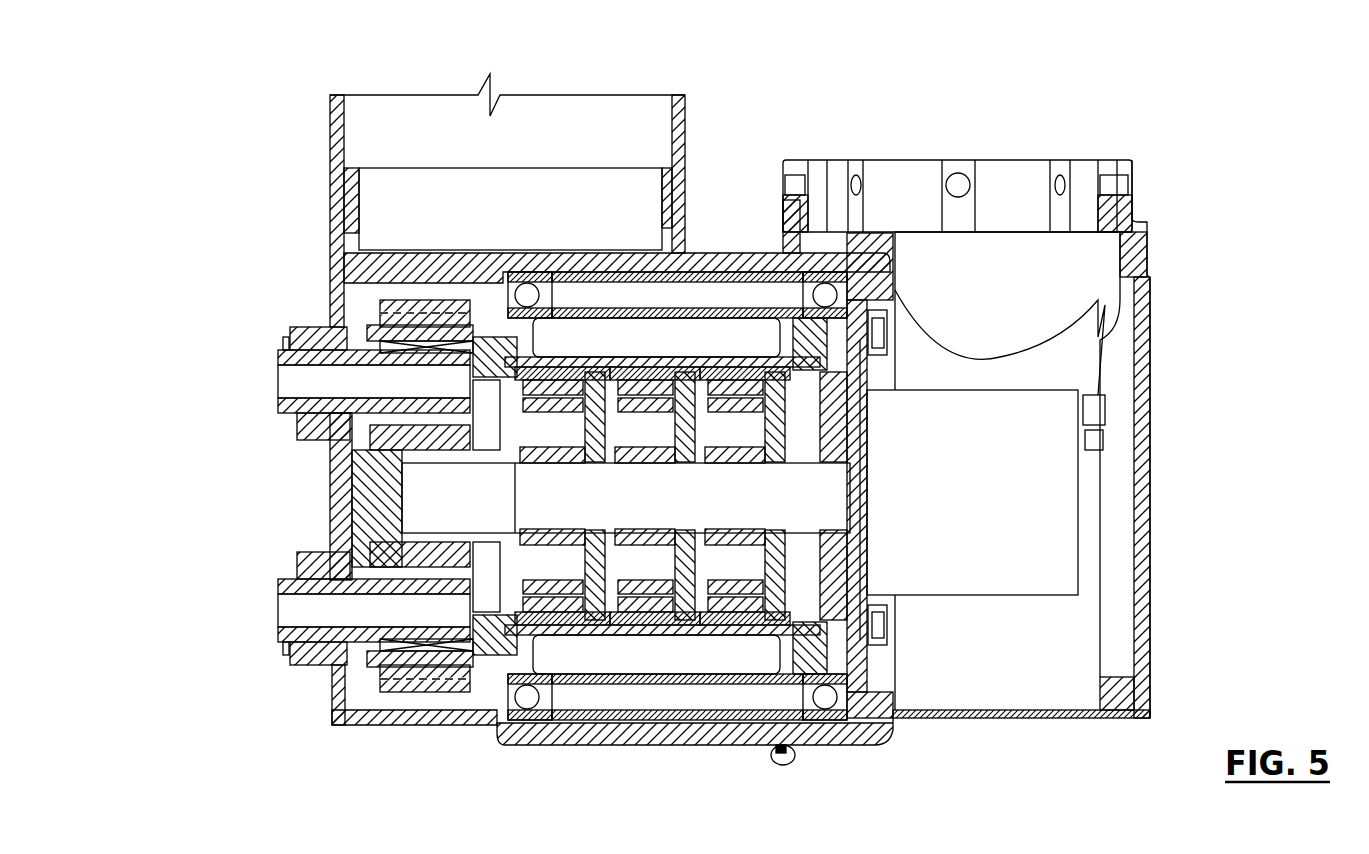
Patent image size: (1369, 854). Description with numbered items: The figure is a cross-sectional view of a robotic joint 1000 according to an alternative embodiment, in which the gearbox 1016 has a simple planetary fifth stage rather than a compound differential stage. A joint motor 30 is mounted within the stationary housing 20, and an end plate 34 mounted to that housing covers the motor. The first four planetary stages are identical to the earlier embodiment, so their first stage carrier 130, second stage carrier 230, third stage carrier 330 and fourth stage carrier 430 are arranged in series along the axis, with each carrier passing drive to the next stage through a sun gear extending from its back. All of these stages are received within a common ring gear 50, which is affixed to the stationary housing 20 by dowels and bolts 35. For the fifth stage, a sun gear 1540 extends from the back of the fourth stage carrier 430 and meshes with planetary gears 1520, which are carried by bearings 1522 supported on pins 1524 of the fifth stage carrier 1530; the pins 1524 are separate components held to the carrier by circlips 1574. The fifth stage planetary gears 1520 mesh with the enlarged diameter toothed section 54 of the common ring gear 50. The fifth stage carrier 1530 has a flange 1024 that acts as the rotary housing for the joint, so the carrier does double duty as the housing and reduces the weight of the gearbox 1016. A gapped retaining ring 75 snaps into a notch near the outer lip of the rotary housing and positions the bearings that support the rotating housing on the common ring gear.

The joint 1000 is at (803, 117).
The flange 1024 is at (720, 232).
The retaining ring 75 is at (887, 233).
The bearings 1522 is at (387, 303).
The planetary gears 1520 is at (436, 323).
The fifth stage carrier 1530 is at (327, 326).
The pins 1524 is at (415, 366).
The circlips 1574 is at (292, 426).
The sun gear 1540 is at (353, 479).
The gearbox 1016 is at (285, 516).
The fourth stage carrier 430 is at (505, 486).
The third stage carrier 330 is at (612, 480).
The second stage carrier 230 is at (698, 482).
The first stage carrier 130 is at (770, 482).
The joint motor 30 is at (969, 490).
The end plate 34 is at (1150, 510).
The bolts 35 is at (890, 630).
The common ring gear 50 is at (617, 640).
The enlarged diameter toothed section 54 is at (430, 692).
The stationary housing 20 is at (975, 720).